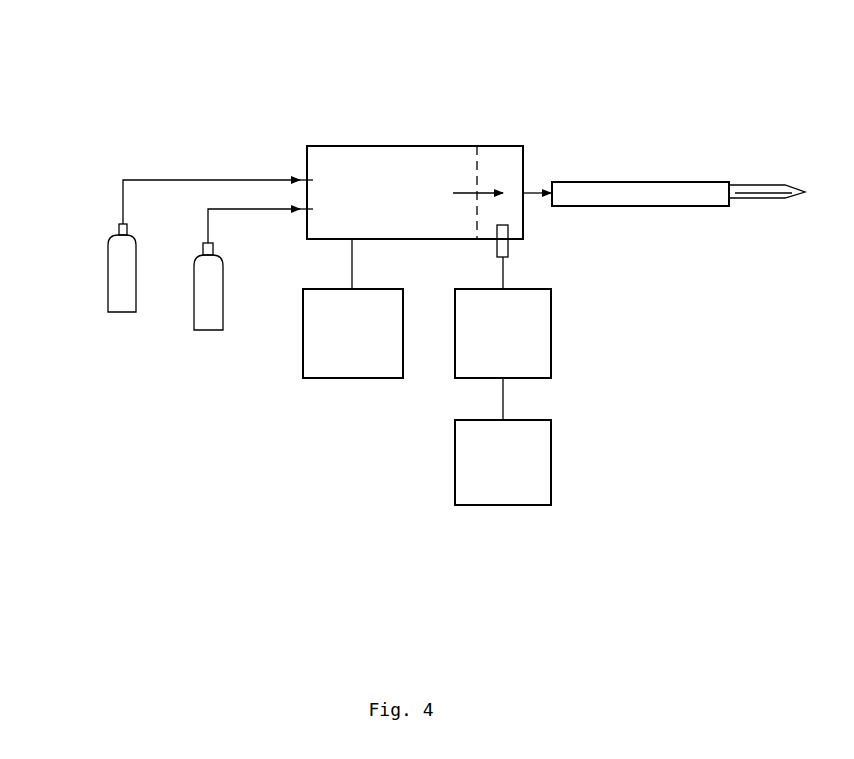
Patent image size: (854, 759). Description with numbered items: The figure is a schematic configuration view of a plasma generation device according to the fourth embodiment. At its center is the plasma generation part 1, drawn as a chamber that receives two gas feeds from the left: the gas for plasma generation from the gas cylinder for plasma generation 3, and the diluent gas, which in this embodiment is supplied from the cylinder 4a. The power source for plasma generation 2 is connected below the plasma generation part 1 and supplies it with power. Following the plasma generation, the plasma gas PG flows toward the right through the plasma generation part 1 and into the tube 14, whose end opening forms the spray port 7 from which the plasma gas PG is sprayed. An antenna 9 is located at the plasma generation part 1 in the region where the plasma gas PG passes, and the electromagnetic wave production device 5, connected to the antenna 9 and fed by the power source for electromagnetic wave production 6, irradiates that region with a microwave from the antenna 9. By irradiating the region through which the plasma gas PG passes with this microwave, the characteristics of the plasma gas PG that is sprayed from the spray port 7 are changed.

The plasma generation part 1 is at (349, 146).
The power source for plasma generation 2 is at (304, 343).
The gas cylinder for plasma generation 3 is at (197, 295).
The cylinder 4a is at (108, 268).
The electromagnetic wave production device 5 is at (551, 334).
The power source for electromagnetic wave production 6 is at (551, 460).
The spray port 7 is at (738, 176).
The antenna 9 is at (508, 250).
The tube 14 is at (601, 182).
The plasma gas PG is at (467, 190).